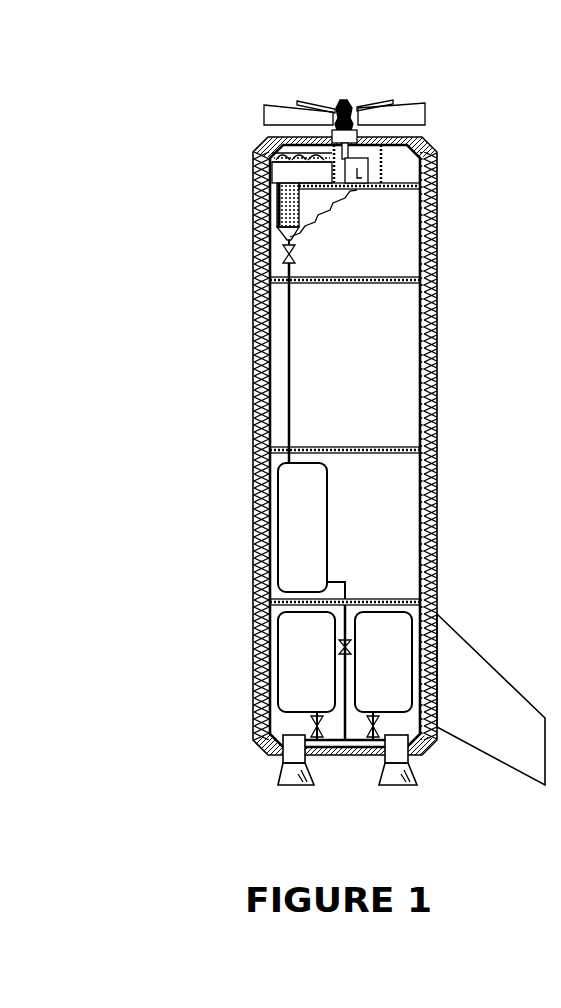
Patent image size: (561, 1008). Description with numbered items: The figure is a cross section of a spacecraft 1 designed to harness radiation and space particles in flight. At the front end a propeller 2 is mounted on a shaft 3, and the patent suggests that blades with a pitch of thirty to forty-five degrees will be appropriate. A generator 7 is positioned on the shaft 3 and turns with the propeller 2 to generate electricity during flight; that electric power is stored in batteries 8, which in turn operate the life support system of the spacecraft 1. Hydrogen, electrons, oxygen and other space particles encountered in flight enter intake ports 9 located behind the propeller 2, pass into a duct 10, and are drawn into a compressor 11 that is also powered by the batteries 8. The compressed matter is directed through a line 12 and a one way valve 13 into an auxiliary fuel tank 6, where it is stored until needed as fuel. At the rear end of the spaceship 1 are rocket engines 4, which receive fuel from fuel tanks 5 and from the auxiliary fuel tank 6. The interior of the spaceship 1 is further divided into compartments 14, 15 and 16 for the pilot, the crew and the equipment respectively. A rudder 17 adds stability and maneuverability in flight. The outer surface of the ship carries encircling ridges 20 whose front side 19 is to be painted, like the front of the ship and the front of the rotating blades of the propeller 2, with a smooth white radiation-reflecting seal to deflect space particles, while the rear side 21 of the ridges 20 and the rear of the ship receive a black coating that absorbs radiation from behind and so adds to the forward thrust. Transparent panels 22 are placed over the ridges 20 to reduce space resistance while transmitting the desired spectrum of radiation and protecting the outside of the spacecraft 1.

The spacecraft 1 is at (215, 453).
The propeller 2 is at (282, 108).
The shaft 3 is at (343, 104).
The rocket engines 4 is at (293, 786).
The fuel tanks 5 is at (380, 677).
The auxiliary fuel tank 6 is at (292, 573).
The generator 7 is at (332, 137).
The batteries 8 is at (370, 189).
The intake ports 9 is at (270, 156).
The duct 10 is at (288, 173).
The compressor 11 is at (283, 218).
The line 12 is at (288, 318).
The one way valve 13 is at (287, 253).
The compartment 14 is at (402, 170).
The compartment 15 is at (392, 352).
The compartment 16 is at (390, 552).
The rudder 17 is at (465, 657).
The front side 19 is at (253, 505).
The ridges 20 is at (240, 516).
The rear side 21 is at (253, 528).
The transparent panels 22 is at (253, 393).